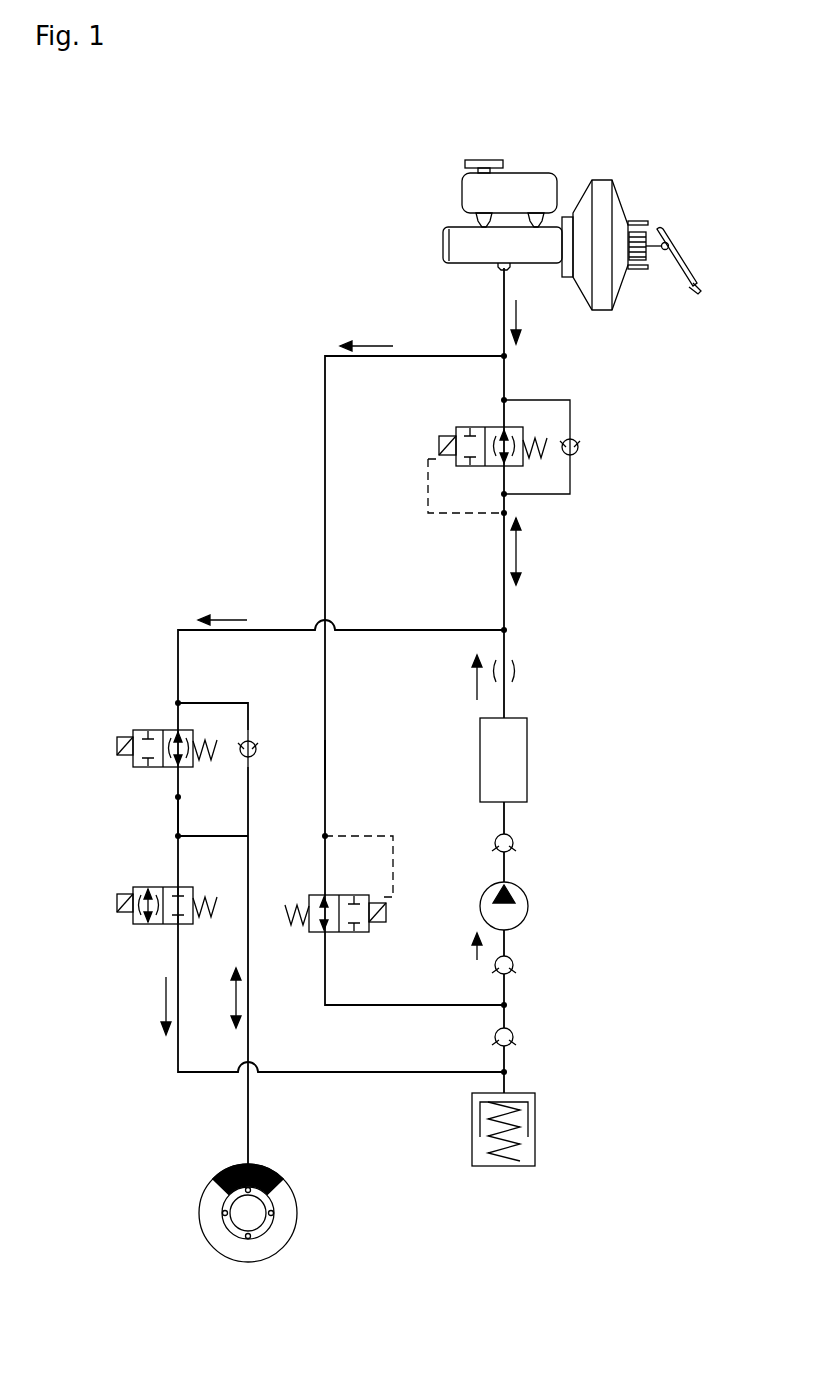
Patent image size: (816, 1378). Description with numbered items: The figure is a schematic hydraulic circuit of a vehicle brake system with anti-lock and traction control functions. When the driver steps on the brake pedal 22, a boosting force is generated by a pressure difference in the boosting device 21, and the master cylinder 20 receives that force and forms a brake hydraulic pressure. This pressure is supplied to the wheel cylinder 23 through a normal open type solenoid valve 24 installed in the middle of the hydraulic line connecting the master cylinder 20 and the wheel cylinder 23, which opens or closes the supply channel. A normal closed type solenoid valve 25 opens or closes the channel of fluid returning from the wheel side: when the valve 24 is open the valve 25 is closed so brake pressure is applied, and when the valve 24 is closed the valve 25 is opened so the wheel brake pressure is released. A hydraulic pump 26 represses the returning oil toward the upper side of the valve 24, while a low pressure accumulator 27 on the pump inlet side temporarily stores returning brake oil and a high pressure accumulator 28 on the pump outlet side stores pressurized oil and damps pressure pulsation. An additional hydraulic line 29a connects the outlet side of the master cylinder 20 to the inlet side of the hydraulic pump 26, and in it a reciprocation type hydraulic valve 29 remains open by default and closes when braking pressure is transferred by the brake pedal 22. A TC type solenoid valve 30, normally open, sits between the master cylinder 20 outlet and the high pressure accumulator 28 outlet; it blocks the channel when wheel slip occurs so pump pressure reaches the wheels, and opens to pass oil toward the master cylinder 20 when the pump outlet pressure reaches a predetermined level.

The master cylinder 20 is at (449, 242).
The boosting device 21 is at (615, 207).
The brake pedal 22 is at (677, 262).
The wheel cylinder 23 is at (282, 1168).
The normal open type solenoid valve 24 is at (126, 757).
The normal closed type solenoid valve 25 is at (126, 913).
The hydraulic pump 26 is at (529, 906).
The low pressure accumulator 27 is at (536, 1128).
The high pressure accumulator 28 is at (529, 760).
The reciprocation type hydraulic valve 29 is at (365, 933).
The additional hydraulic line 29a is at (327, 757).
The TC type solenoid valve 30 is at (448, 427).